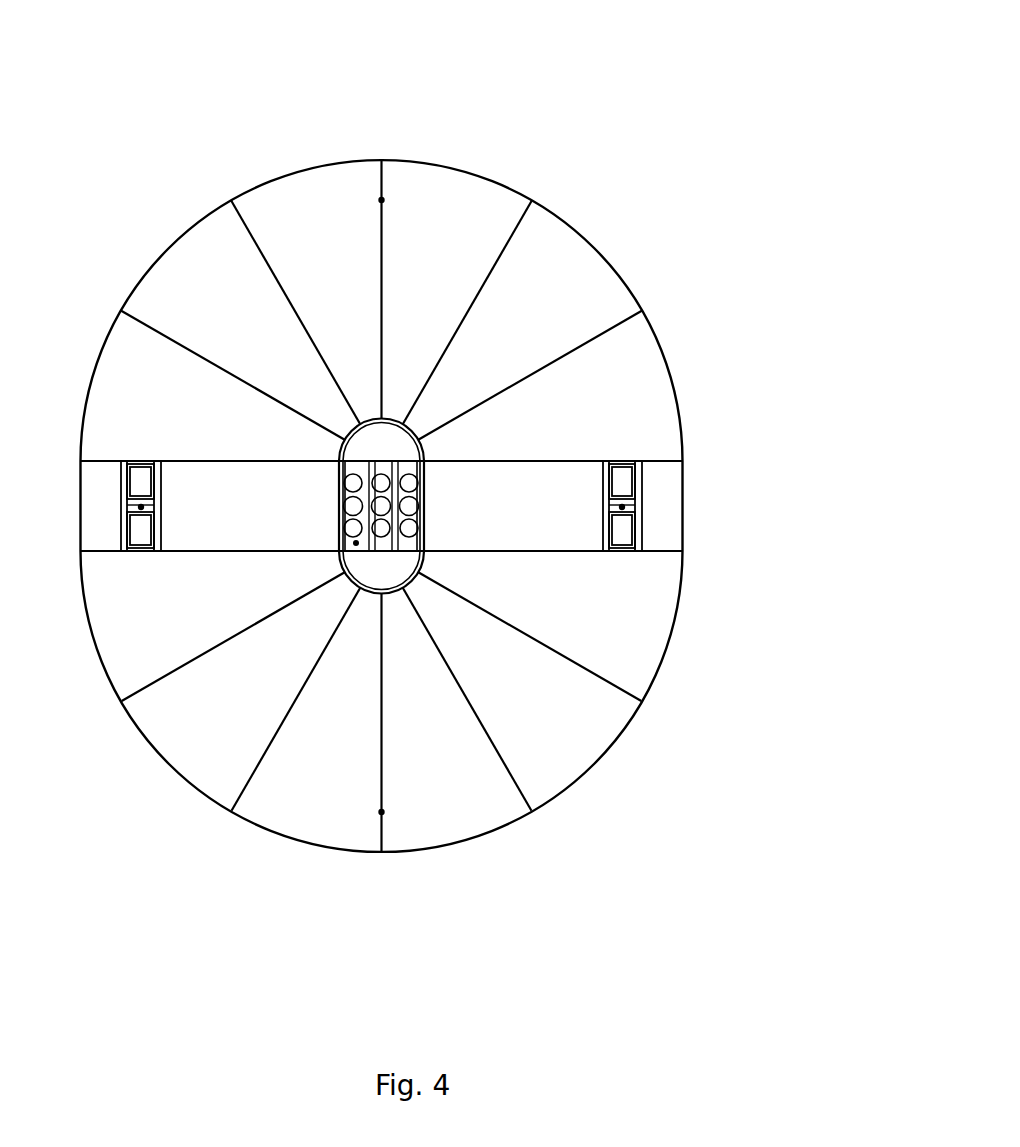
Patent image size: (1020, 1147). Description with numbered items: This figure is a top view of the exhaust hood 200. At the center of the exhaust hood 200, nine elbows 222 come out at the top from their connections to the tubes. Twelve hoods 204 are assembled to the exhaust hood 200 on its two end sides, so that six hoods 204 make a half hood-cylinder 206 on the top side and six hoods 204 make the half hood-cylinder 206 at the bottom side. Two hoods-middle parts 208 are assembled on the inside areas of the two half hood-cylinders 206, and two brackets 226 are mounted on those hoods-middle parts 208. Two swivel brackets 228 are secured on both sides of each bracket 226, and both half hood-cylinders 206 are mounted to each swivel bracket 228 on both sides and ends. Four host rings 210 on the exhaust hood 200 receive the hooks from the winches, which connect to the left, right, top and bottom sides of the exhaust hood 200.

The exhaust hood 200 is at (475, 172).
The hood 204 is at (180, 278).
The half hood-cylinder 206 is at (322, 255).
The hoods-middle part 208 is at (102, 516).
The host ring 210 is at (382, 199).
The elbow 222 is at (345, 568).
The bracket 226 is at (628, 505).
The swivel bracket 228 is at (643, 476).